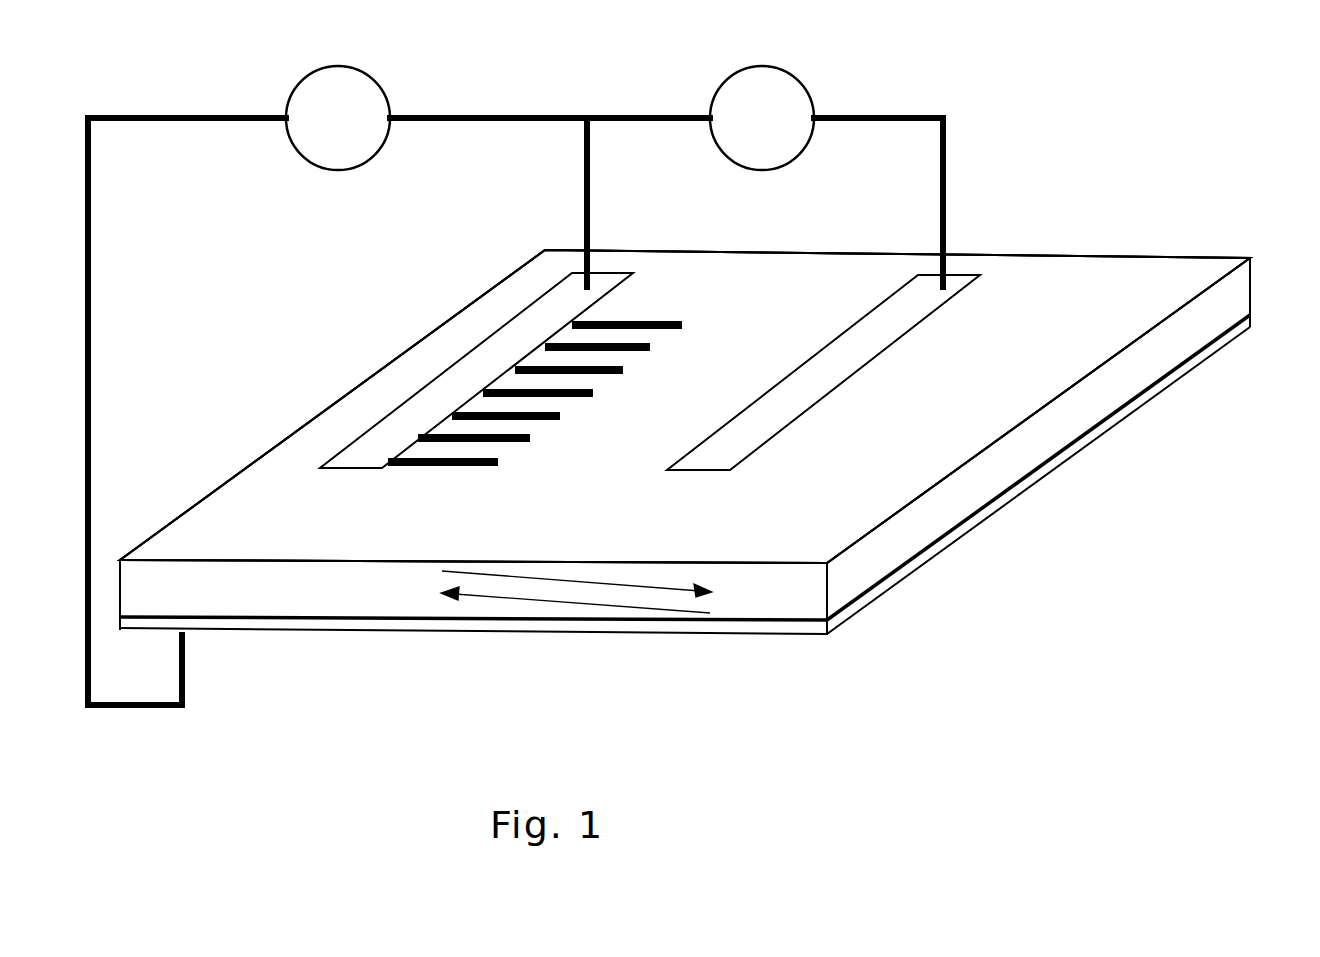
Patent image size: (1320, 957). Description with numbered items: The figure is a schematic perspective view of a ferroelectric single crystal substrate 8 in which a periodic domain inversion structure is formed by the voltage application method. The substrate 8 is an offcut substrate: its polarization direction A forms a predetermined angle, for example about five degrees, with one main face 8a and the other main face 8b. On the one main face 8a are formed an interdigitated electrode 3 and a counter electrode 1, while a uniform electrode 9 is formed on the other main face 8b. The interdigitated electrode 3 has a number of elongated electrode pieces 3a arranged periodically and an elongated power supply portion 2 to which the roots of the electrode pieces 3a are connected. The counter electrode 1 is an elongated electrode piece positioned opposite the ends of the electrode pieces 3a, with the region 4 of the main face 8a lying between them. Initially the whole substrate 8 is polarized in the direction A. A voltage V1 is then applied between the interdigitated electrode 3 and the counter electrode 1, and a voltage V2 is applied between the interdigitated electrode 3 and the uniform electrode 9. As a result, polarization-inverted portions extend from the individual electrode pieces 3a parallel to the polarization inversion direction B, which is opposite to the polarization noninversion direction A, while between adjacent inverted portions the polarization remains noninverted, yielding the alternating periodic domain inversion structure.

The counter electrode 1 is at (850, 358).
The power supply portion 2 is at (522, 332).
The interdigitated electrode 3 is at (592, 404).
The electrode piece 3a is at (682, 306).
The substrate surface region 4 is at (710, 409).
The ferroelectric single crystal substrate 8 is at (1220, 299).
The one main face 8a is at (1162, 282).
The other main face 8b is at (1177, 372).
The uniform electrode 9 is at (960, 535).
The polarization direction A is at (590, 610).
The polarization inversion direction B is at (665, 590).
The voltage V1 is at (762, 118).
The voltage V2 is at (338, 118).